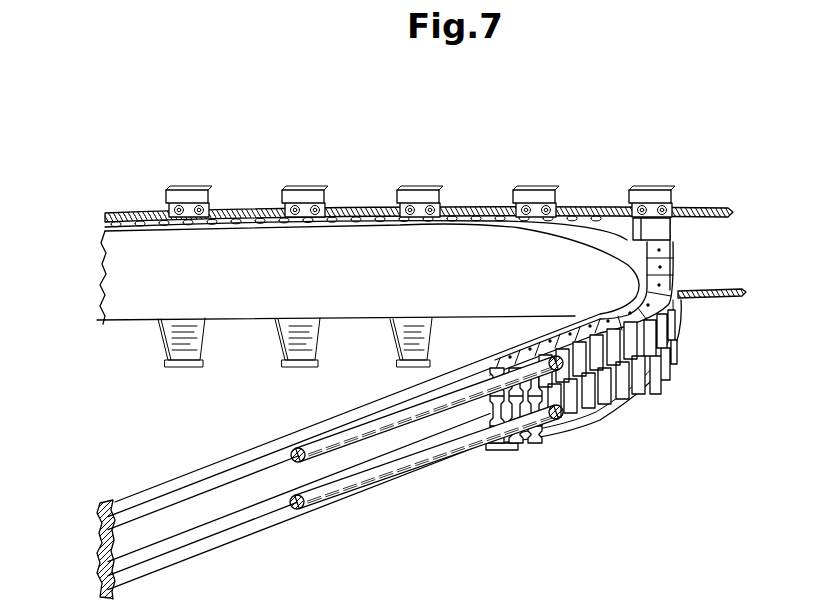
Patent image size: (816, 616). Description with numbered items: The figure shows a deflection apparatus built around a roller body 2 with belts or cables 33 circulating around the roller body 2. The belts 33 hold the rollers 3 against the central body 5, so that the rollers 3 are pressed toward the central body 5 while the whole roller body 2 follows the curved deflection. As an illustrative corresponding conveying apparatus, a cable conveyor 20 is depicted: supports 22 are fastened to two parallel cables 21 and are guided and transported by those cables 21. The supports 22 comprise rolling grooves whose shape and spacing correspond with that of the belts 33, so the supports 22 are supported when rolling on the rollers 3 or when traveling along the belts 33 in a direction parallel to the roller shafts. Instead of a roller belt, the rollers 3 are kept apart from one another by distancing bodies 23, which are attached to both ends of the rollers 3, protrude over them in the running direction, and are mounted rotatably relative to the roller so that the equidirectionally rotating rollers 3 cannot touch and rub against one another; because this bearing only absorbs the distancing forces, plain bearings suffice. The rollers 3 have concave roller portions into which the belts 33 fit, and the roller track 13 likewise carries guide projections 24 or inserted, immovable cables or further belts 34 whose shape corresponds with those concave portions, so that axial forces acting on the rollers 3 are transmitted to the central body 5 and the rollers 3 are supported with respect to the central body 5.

The roller body 2 is at (632, 440).
The rollers 3 is at (550, 437).
The central body 5 is at (138, 320).
The roller track 13 is at (225, 510).
The cable conveyor 20 is at (497, 172).
The cables 21 is at (703, 206).
The supports 22 is at (644, 188).
The distancing bodies 23 is at (676, 270).
The guide projections 24 is at (330, 442).
The belts 33 is at (681, 357).
The further belts 34 is at (323, 490).